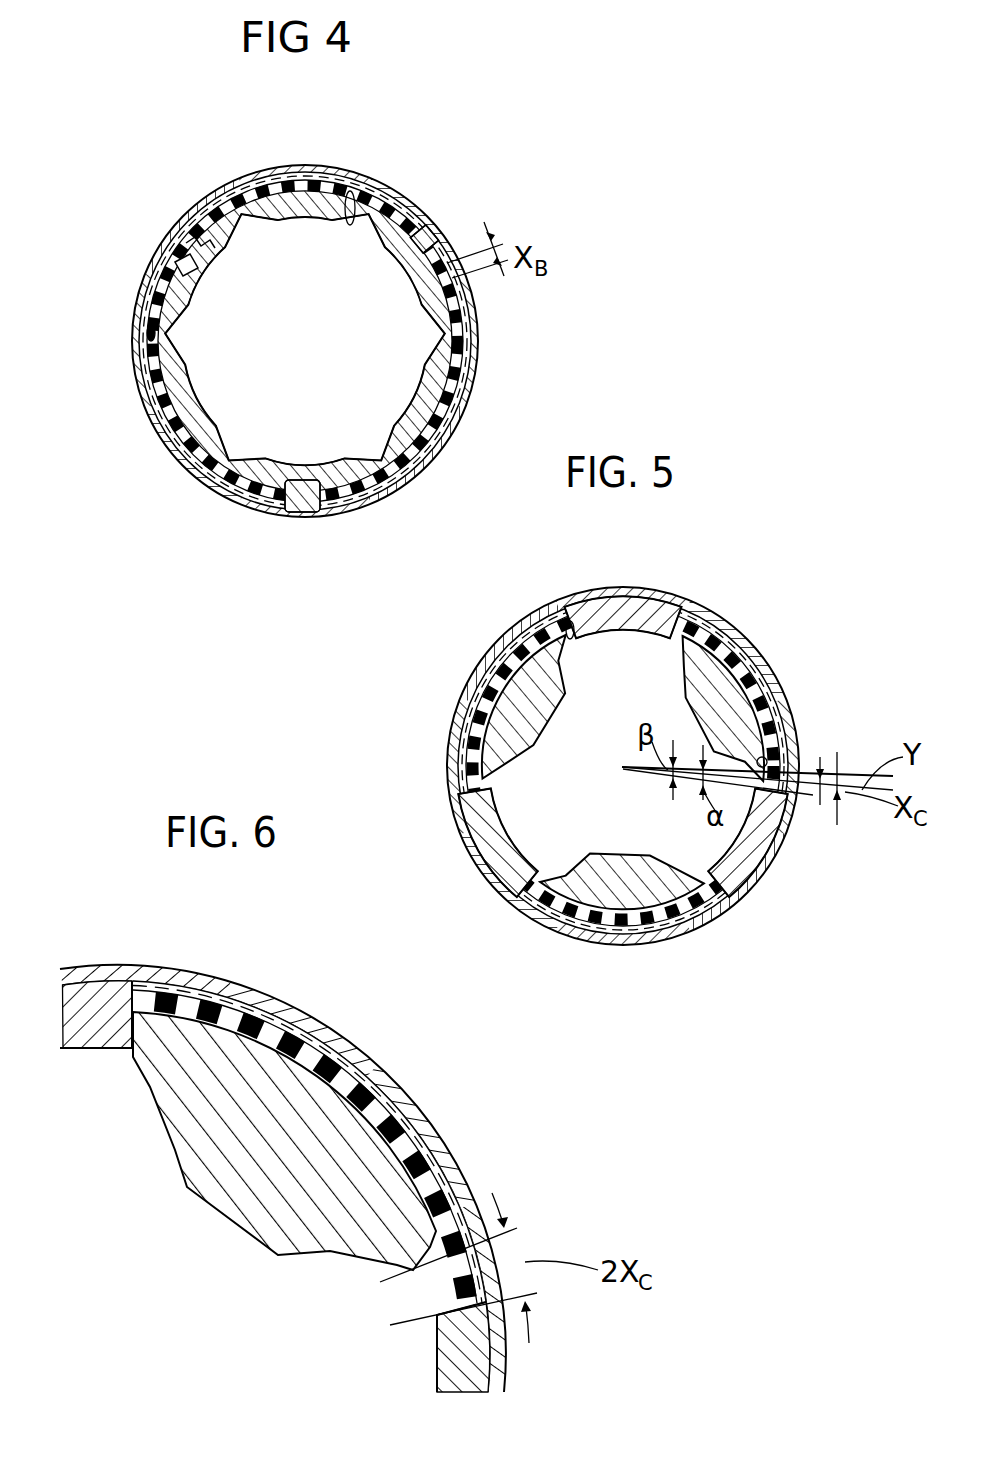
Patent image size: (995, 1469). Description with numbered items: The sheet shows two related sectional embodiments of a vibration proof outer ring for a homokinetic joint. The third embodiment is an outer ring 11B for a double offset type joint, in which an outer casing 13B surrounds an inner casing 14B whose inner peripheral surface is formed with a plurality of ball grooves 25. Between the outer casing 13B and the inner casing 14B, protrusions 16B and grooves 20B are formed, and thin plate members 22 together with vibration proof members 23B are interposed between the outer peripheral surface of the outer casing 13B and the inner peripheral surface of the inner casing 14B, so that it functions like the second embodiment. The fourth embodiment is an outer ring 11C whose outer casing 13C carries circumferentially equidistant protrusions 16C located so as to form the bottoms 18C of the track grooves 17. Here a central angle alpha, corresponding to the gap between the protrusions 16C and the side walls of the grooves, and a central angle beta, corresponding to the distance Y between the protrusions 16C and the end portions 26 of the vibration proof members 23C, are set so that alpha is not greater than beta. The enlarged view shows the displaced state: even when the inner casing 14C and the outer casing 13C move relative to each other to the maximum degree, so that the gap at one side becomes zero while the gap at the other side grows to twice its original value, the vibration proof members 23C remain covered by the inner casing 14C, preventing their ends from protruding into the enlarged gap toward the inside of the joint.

In FIG. 4, the outer cylindrical member 11B is at (438, 223).
In FIG. 4, the outer casing 13B is at (366, 183).
In FIG. 4, the inner casing 14B is at (262, 205).
In FIG. 4, the protrusions 16B is at (196, 236).
In FIG. 4, the grooves 20B is at (176, 282).
In FIG. 4, the thin plate members 22 is at (149, 400).
In FIG. 5, the thin plate members 22 is at (500, 663).
In FIG. 6, the thin plate members 22 is at (395, 1122).
In FIG. 4, the vibration proof members 23B is at (150, 333).
In FIG. 4, the ball grooves 25 is at (346, 192).
In FIG. 5, the outer cylindrical member 11C is at (781, 667).
In FIG. 6, the outer cylindrical member 11C is at (328, 1014).
In FIG. 5, the outer casing 13C is at (470, 700).
In FIG. 6, the outer casing 13C is at (371, 1075).
In FIG. 5, the inner casing 14C is at (500, 735).
In FIG. 6, the inner casing 14C is at (236, 1178).
In FIG. 5, the protrusions 16C is at (668, 610).
In FIG. 6, the protrusions 16C is at (96, 988).
In FIG. 5, the track grooves 17 is at (662, 668).
In FIG. 5, the slit 18C is at (568, 622).
In FIG. 6, the slit 18C is at (104, 1050).
In FIG. 5, the vibration proof members 23C is at (455, 752).
In FIG. 5, the end portions 26 is at (770, 755).